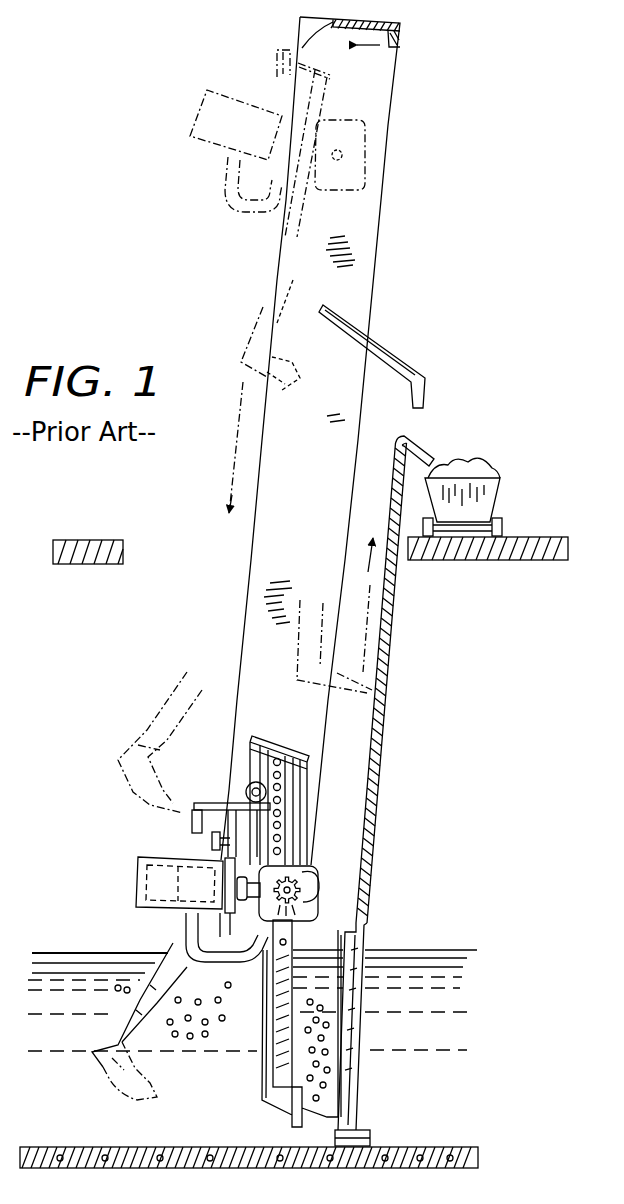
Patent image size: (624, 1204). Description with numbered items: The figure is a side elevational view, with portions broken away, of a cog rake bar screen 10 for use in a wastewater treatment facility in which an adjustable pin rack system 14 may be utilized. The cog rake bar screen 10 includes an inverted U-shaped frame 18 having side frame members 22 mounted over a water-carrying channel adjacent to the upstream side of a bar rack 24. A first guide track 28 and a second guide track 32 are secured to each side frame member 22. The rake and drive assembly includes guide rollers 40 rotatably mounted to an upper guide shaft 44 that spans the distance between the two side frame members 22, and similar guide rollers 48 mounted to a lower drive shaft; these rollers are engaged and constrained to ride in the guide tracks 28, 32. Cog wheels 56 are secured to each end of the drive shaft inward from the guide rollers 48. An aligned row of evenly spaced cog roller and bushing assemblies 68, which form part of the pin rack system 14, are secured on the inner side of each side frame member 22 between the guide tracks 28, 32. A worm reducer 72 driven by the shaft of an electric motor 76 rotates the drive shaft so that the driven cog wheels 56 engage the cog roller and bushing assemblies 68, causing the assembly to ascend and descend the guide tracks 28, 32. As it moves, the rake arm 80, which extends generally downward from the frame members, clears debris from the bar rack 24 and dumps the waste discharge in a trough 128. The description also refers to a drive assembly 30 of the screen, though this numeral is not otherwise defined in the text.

The cog rake bar screen 10 is at (107, 237).
The adjustable pin rack system 14 is at (284, 745).
The inverted U-shaped frame 18 is at (403, 217).
The side frame member 22 is at (300, 22).
The bar rack 24 is at (363, 1025).
The first guide track 28 is at (255, 755).
The drive assembly 30 is at (162, 847).
The second guide track 32 is at (298, 807).
The guide rollers 40 is at (250, 787).
The upper guide shaft 44 is at (247, 797).
The guide rollers 48 is at (318, 903).
The cog wheels 56 is at (313, 867).
The cog roller and bushing assemblies 68 is at (287, 776).
The worm reducer 72 is at (318, 887).
The electric motor 76 is at (136, 880).
The rake arm 80 is at (140, 728).
The trough 128 is at (490, 503).